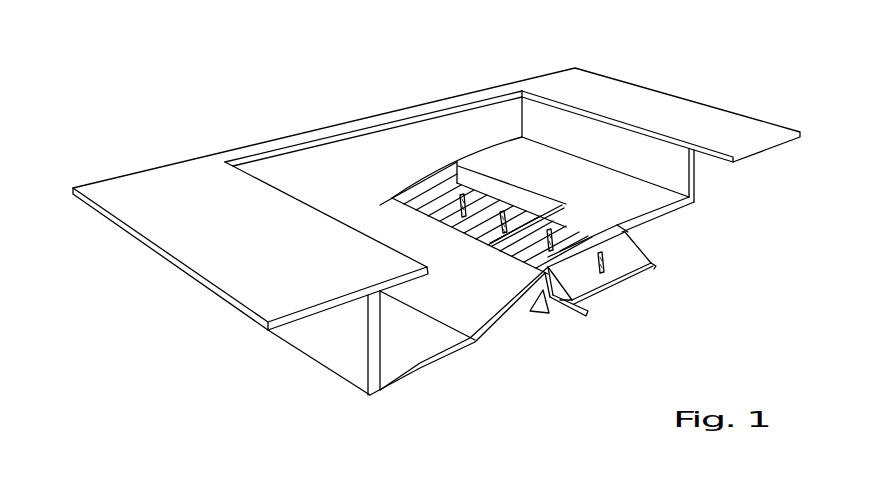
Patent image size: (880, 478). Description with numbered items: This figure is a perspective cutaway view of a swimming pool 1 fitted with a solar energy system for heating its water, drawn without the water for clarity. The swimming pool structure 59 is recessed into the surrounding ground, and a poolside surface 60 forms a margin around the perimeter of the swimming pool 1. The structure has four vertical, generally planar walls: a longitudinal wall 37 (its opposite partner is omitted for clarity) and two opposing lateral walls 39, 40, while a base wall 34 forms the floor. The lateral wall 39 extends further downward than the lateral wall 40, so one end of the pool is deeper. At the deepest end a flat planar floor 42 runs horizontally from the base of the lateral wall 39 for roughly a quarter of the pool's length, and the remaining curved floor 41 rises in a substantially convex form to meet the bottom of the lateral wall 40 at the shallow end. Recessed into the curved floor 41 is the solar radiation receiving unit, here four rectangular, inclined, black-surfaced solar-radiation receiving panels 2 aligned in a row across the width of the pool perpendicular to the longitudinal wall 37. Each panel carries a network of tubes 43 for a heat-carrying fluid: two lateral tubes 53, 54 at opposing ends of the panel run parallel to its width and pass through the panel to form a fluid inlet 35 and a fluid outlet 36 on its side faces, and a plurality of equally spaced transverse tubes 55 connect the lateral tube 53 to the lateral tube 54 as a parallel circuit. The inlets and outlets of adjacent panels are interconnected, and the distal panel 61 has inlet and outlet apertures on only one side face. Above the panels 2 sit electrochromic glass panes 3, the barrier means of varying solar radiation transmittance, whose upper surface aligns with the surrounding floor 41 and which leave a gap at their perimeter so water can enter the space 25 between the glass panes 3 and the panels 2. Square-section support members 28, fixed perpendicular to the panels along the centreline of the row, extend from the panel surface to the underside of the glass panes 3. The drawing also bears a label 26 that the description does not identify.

The swimming pool 1 is at (370, 91).
The solar-radiation receiving panels 2 is at (572, 272).
The electrochromic glass panes 3 is at (435, 182).
The space 25 is at (603, 230).
The curved guide wall 26 is at (489, 173).
The support members 28 is at (620, 269).
The base wall 34 is at (492, 310).
The fluid inlet 35 is at (657, 262).
The fluid outlet 36 is at (578, 311).
The longitudinal vertical wall 37 is at (297, 165).
The lateral wall at deepest end 39 is at (380, 343).
The lateral wall at shallowest end 40 is at (678, 168).
The curved floor 41 is at (648, 198).
The flat planar floor 42 is at (440, 345).
The network of tubes 43 is at (568, 235).
The lateral tube 53 is at (583, 230).
The lateral tube 54 is at (558, 308).
The transverse linear tubes 55 is at (603, 281).
The swimming pool structure 59 is at (302, 370).
The poolside surface 60 is at (165, 192).
The distal panel 61 is at (423, 203).